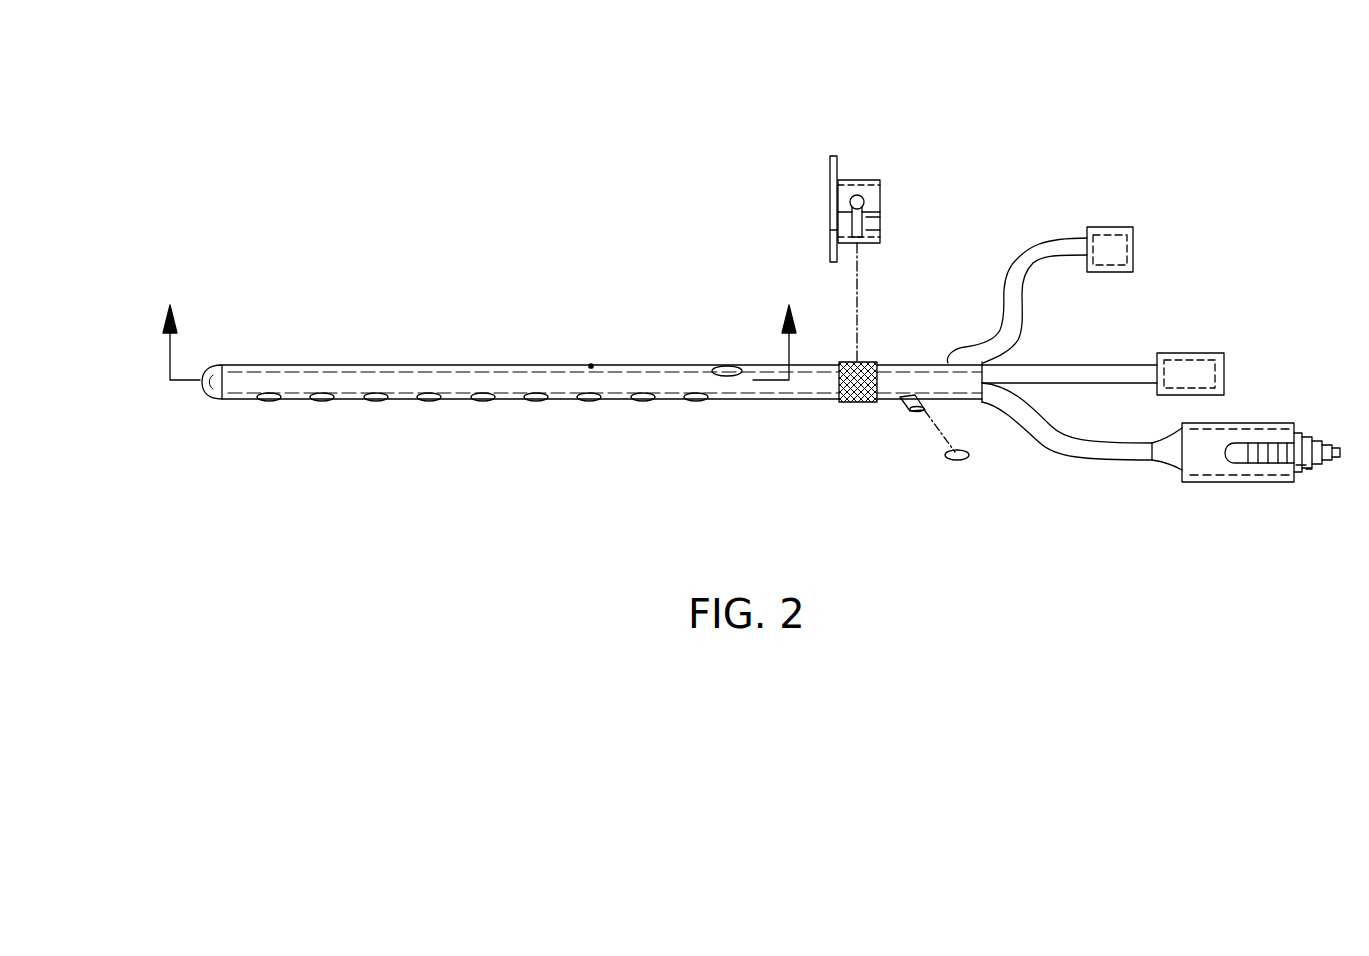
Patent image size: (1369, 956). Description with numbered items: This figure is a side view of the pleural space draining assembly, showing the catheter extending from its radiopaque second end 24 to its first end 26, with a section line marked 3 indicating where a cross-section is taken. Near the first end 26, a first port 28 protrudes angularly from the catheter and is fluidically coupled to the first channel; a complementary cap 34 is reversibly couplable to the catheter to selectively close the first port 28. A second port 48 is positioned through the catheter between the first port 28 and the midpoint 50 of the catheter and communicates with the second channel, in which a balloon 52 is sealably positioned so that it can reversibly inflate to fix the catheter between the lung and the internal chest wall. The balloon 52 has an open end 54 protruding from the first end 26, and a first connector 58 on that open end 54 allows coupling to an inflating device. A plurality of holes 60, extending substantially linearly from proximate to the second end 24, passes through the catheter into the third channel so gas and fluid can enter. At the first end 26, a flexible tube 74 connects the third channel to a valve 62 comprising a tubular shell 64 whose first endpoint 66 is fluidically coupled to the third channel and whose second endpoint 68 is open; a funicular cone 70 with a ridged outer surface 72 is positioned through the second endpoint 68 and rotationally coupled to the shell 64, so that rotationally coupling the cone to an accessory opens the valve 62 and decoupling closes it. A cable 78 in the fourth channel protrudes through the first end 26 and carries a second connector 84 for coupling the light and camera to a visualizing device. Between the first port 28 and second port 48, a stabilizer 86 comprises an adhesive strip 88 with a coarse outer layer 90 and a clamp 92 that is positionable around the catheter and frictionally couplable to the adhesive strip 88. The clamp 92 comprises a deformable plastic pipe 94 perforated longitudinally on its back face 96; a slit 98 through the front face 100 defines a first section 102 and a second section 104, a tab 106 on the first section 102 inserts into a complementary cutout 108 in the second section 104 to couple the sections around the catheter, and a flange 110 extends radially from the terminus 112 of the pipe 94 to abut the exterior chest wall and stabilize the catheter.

The section line 3- 3 is at (479, 328).
The second end 24 is at (210, 392).
The first end 26 is at (976, 383).
The first port 28 is at (913, 415).
The cap 34 is at (957, 460).
The second port 48 is at (727, 368).
The midpoint 50 is at (591, 366).
The balloon 52 is at (1030, 252).
The open end 54 is at (1086, 242).
The first connector 58 is at (1115, 235).
The holes 60 is at (696, 400).
The valve 62 is at (1205, 482).
The shell 64 is at (1253, 473).
The first endpoint 66 is at (1295, 432).
The second endpoint 68 is at (1170, 452).
The funicular cone 70 is at (1322, 437).
The outer surface 72 is at (1312, 470).
The tube 74 is at (1073, 452).
The cable 78 is at (1090, 365).
The second connector 84 is at (1192, 365).
The stabilizer 86 is at (880, 362).
The adhesive strip 88 is at (852, 402).
The outer layer 90 is at (872, 402).
The clamp 92 is at (834, 156).
The pipe 94 is at (883, 187).
The back face 96 is at (825, 195).
The slit 98 is at (880, 218).
The front face 100 is at (880, 202).
The first section 102 is at (870, 243).
The second section 104 is at (845, 183).
The tab 106 is at (846, 243).
The cutout 108 is at (860, 178).
The flange 110 is at (832, 248).
The terminus 112 is at (833, 212).